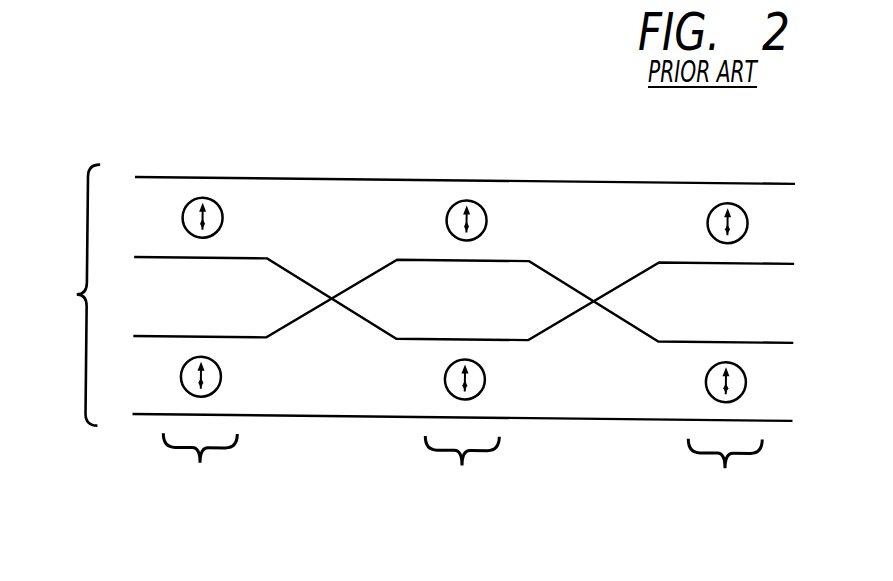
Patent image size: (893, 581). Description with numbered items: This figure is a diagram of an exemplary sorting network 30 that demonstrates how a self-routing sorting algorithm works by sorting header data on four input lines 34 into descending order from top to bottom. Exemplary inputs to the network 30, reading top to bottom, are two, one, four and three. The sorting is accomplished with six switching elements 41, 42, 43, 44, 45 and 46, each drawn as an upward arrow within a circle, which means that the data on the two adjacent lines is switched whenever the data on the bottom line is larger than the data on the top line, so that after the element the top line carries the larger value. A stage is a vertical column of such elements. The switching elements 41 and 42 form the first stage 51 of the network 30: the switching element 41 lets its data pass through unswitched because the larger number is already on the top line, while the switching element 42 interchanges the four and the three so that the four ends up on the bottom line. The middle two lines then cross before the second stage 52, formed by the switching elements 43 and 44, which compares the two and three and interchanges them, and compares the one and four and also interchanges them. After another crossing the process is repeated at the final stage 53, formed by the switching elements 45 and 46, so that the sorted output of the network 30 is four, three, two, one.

The network 30 is at (96, 159).
The input lines 34 is at (77, 295).
The switching element 41 is at (218, 204).
The switching element 42 is at (218, 363).
The switching element 43 is at (482, 204).
The switching element 44 is at (482, 363).
The switching element 45 is at (743, 204).
The switching element 46 is at (743, 363).
The first stage 51 is at (200, 465).
The second stage 52 is at (462, 468).
The final stage 53 is at (725, 471).